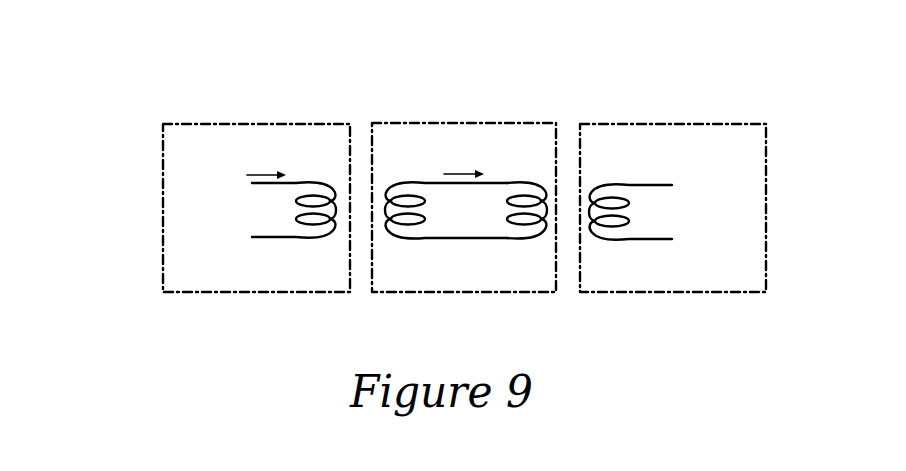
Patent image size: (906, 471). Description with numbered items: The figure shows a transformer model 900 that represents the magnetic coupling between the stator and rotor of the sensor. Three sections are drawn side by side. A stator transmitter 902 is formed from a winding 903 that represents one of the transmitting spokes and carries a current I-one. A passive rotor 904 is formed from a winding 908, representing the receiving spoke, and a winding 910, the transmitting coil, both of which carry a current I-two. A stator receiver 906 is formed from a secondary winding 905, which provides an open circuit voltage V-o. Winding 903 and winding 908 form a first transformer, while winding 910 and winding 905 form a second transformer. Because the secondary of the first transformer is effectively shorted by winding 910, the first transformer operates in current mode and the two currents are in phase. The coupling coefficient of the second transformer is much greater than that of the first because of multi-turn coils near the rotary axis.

The transformer model 900 is at (155, 54).
The stator transmitter 902 is at (278, 294).
The winding 903 is at (245, 207).
The passive rotor 904 is at (488, 294).
The secondary winding 905 is at (672, 152).
The stator receiver 906 is at (690, 294).
The winding 908 is at (424, 147).
The winding 910 is at (520, 182).